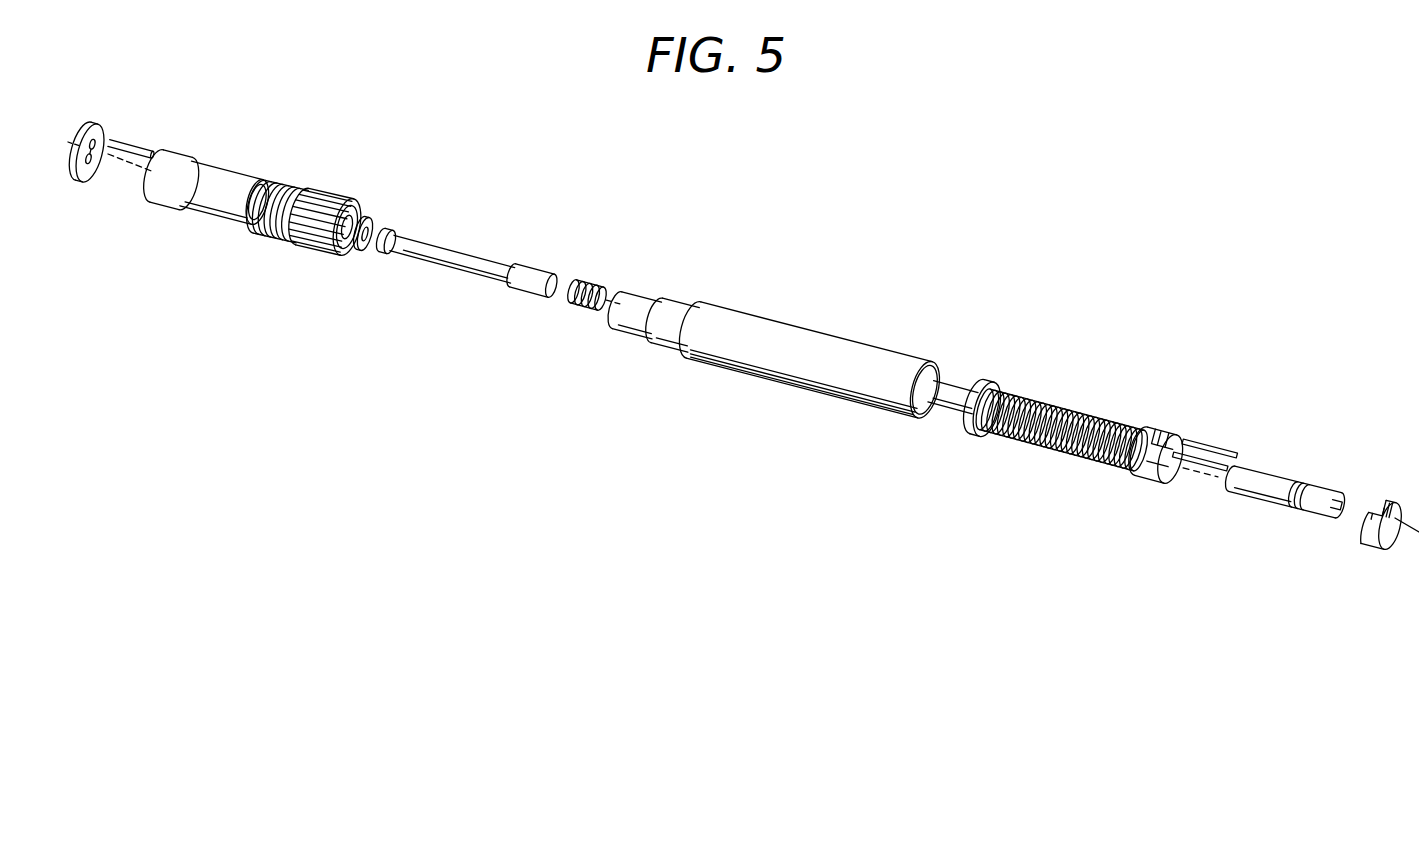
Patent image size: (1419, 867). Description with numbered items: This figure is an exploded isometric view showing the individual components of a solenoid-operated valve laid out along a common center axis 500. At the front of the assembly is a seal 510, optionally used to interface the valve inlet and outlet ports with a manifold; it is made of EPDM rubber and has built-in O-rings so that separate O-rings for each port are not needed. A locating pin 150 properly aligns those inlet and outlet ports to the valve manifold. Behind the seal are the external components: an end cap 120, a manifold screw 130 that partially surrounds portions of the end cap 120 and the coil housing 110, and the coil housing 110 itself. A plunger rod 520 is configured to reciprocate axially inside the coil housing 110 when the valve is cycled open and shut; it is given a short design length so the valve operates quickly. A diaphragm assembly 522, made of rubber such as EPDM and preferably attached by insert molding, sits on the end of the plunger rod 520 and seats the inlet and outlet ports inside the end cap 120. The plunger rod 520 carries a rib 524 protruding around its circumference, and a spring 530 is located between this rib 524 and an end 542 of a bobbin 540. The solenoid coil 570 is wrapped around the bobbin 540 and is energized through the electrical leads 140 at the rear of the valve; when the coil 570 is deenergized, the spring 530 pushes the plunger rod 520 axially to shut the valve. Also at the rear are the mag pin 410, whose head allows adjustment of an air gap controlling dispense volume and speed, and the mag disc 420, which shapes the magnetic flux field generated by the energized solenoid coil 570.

The center axis 500 is at (80, 137).
The seal 510 is at (113, 132).
The locating pin 150 is at (131, 157).
The end cap 120 is at (230, 167).
The manifold screw 130 is at (307, 258).
The diaphragm assembly 522 is at (370, 217).
The rib 524 is at (383, 250).
The plunger rod 520 is at (493, 260).
The spring 530 is at (597, 287).
The coil housing 110 is at (733, 353).
The end of bobbin 542 is at (930, 413).
The bobbin 540 is at (960, 393).
The solenoid coil 570 is at (1097, 420).
The electrical leads 140 is at (1203, 447).
The mag pin 410 is at (1317, 483).
The mag disc 420 is at (1360, 550).